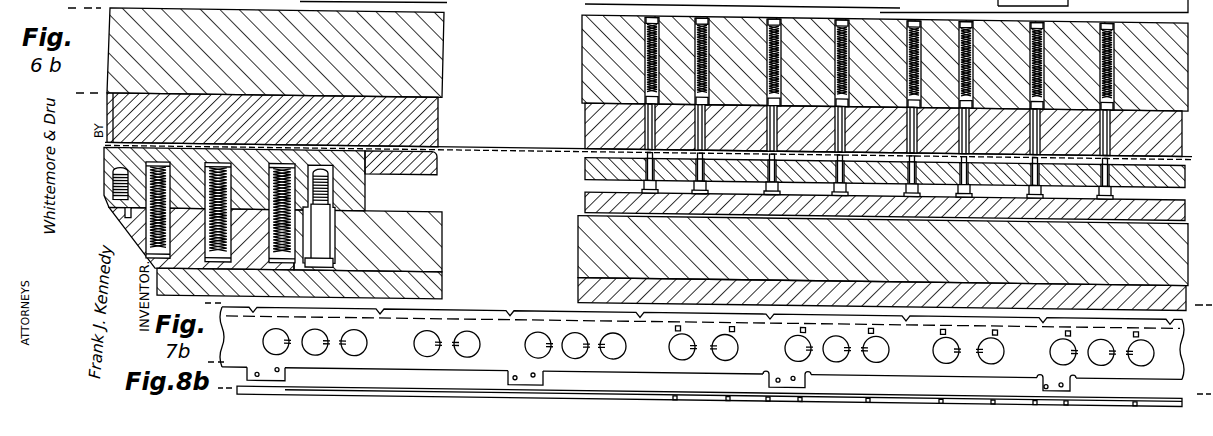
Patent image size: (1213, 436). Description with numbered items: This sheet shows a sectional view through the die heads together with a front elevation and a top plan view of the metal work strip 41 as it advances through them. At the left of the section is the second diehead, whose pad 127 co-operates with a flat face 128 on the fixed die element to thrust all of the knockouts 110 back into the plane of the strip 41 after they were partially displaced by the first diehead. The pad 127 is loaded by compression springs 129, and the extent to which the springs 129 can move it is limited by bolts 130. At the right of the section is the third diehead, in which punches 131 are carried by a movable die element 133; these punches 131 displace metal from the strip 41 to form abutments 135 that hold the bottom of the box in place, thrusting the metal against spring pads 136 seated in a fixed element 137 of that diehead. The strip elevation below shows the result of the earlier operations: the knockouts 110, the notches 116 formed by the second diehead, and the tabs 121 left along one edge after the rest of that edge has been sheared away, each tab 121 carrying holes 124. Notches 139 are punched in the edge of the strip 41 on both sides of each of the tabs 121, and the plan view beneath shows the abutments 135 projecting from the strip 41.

In FIG. 7B, the work strip 41 is at (493, 304).
In FIG. 7B, the knockouts 110 is at (462, 332).
In FIG. 7B, the notches 116 is at (385, 303).
In FIG. 7B, the tabs 121 is at (288, 372).
In FIG. 7B, the holes 124 is at (276, 364).
In FIG. 6B, the pad 127 is at (329, 132).
In FIG. 6B, the flat face 128 is at (378, 169).
In FIG. 6B, the compression springs 129 is at (217, 159).
In FIG. 6B, the bolts 130 is at (112, 174).
In FIG. 6B, the punches 131 is at (653, 170).
In FIG. 6B, the movable die element 133 is at (578, 248).
In FIG. 7B, the abutments 135 is at (728, 315).
In FIG. 8B, the abutments 135 is at (727, 386).
In FIG. 6B, the spring pads 136 is at (700, 126).
In FIG. 6B, the fixed element 137 is at (586, 60).
In FIG. 7B, the notches 139 is at (768, 368).